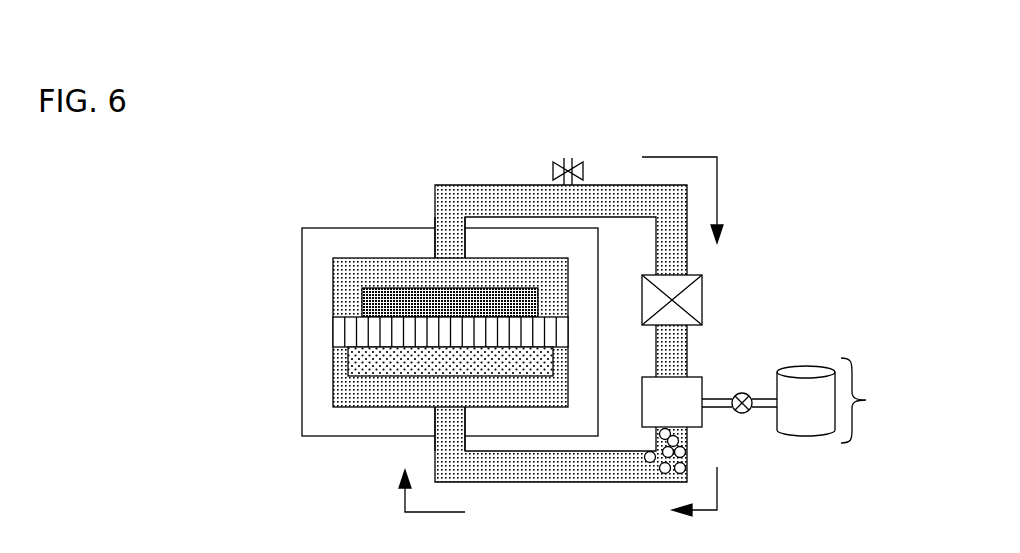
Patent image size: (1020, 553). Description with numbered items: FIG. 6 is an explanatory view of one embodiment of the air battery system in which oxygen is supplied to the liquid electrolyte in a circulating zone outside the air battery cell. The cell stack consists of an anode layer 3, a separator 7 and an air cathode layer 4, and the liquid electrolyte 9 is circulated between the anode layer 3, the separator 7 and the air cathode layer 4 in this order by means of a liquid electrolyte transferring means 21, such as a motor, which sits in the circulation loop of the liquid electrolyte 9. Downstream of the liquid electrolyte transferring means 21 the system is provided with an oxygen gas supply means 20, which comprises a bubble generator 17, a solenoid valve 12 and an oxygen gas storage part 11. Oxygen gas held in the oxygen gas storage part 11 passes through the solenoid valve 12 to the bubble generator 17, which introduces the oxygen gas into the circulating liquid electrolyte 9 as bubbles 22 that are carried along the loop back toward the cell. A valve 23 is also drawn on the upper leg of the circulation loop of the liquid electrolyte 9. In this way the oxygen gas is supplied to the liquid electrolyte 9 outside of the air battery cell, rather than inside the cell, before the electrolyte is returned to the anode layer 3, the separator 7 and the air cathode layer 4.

The anode layer 3 is at (368, 357).
The air cathode layer 4 is at (364, 311).
The separator 7 is at (370, 332).
The liquid electrolyte 9 is at (475, 185).
The oxygen gas storage part 11 is at (806, 372).
The solenoid valve 12 is at (742, 393).
The bubble generator 17 is at (690, 386).
The oxygen gas supply means 20 is at (871, 400).
The liquid electrolyte transferring means 21 is at (693, 302).
The gas bubbles 22 is at (685, 452).
The valve 23 is at (566, 158).